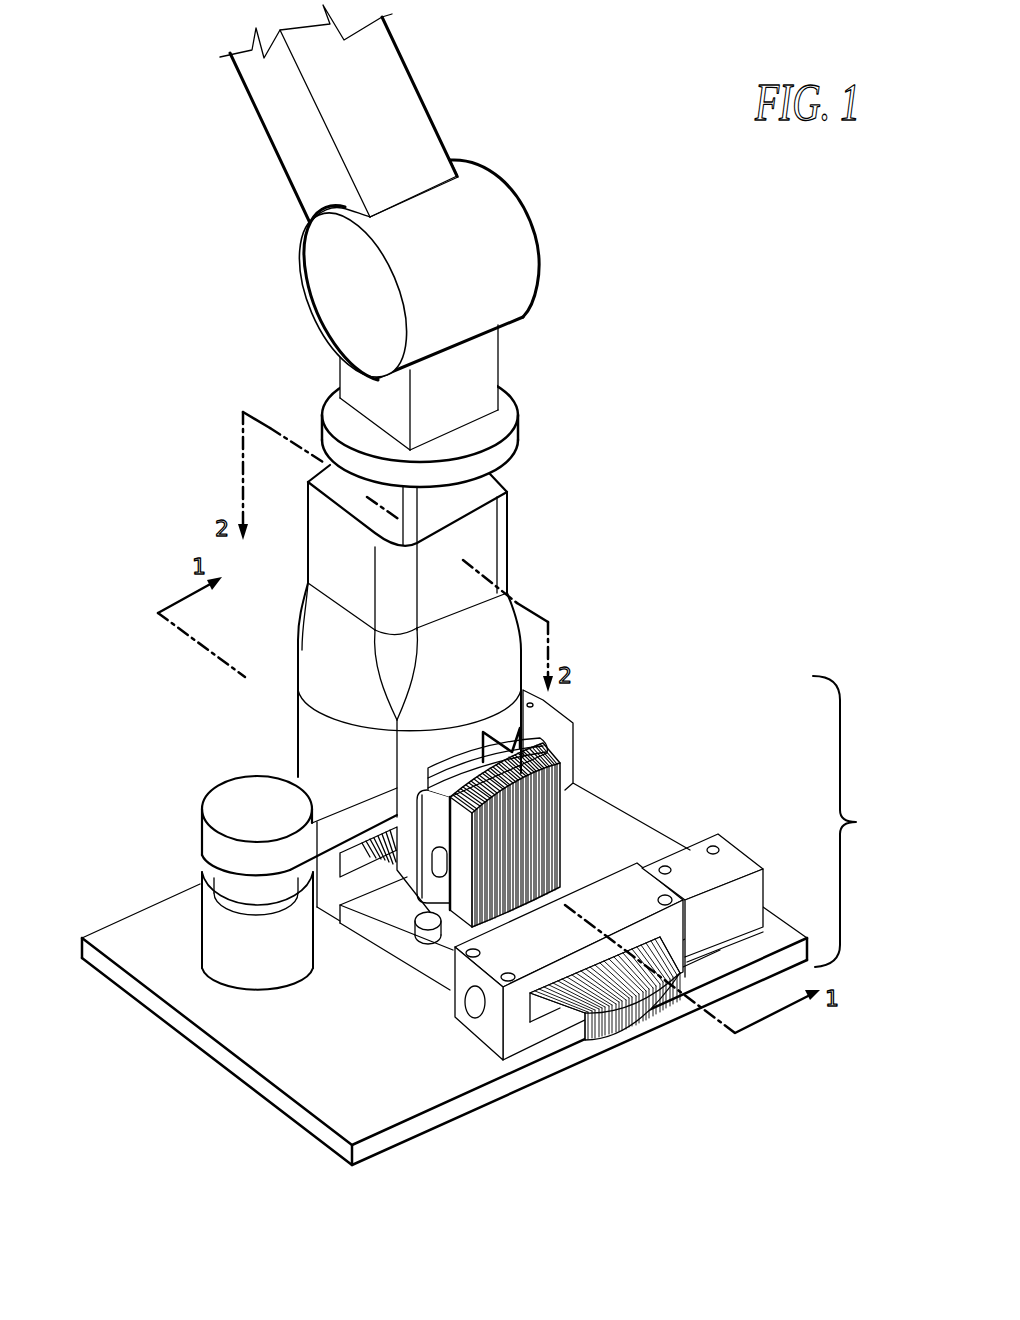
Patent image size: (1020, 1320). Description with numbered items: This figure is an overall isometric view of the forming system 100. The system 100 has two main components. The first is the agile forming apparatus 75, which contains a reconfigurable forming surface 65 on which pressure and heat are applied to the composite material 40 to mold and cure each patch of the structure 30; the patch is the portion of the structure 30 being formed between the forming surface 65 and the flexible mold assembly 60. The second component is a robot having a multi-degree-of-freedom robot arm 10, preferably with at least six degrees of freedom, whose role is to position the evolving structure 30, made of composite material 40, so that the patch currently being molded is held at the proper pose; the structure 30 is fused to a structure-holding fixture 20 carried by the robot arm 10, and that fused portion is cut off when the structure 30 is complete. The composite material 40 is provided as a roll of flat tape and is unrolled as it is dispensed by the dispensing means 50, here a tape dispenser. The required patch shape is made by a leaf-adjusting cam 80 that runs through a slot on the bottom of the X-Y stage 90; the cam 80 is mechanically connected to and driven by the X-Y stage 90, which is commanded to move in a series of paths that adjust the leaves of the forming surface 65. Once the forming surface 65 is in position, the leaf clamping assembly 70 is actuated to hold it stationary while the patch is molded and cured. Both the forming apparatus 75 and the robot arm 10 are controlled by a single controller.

The robot arm 10 is at (322, 288).
The structure-holding fixture 20 is at (470, 492).
The structure 30 is at (343, 665).
The composite material 40 is at (332, 833).
The dispensing means 50 is at (232, 803).
The flexible mold assembly 60 is at (545, 748).
The forming surface 65 is at (548, 830).
The leaf clamping assembly 70 is at (727, 862).
The agile forming apparatus 75 is at (856, 822).
The leaf-adjusting cam 80 is at (437, 955).
The X-Y stage 90 is at (425, 935).
The system 100 is at (648, 345).